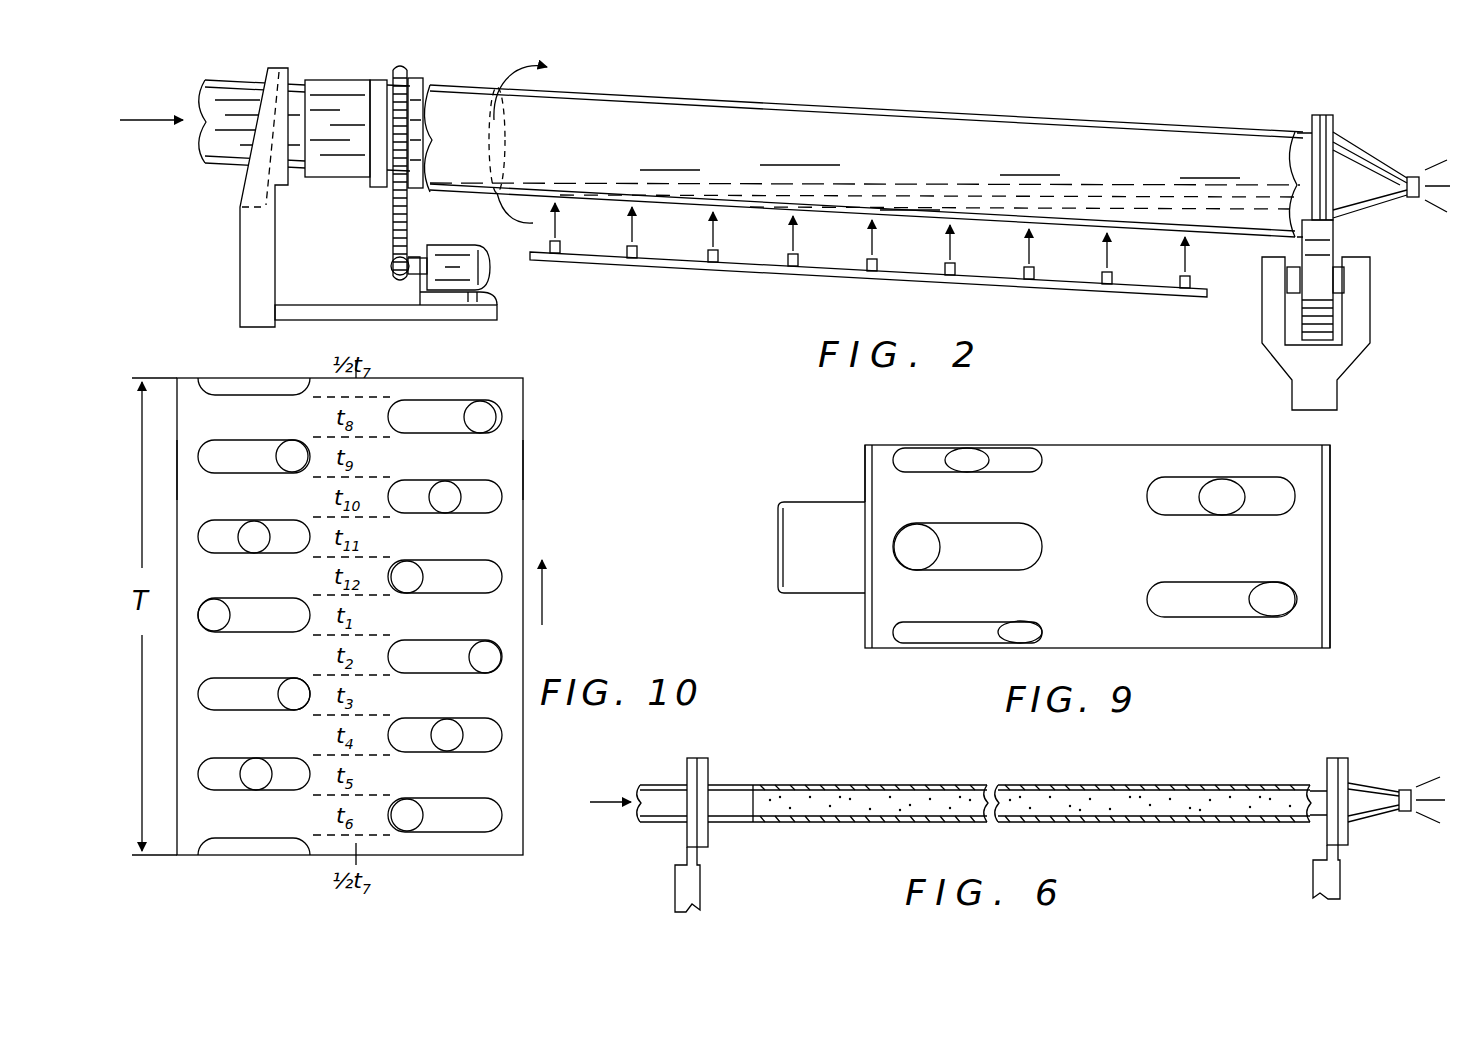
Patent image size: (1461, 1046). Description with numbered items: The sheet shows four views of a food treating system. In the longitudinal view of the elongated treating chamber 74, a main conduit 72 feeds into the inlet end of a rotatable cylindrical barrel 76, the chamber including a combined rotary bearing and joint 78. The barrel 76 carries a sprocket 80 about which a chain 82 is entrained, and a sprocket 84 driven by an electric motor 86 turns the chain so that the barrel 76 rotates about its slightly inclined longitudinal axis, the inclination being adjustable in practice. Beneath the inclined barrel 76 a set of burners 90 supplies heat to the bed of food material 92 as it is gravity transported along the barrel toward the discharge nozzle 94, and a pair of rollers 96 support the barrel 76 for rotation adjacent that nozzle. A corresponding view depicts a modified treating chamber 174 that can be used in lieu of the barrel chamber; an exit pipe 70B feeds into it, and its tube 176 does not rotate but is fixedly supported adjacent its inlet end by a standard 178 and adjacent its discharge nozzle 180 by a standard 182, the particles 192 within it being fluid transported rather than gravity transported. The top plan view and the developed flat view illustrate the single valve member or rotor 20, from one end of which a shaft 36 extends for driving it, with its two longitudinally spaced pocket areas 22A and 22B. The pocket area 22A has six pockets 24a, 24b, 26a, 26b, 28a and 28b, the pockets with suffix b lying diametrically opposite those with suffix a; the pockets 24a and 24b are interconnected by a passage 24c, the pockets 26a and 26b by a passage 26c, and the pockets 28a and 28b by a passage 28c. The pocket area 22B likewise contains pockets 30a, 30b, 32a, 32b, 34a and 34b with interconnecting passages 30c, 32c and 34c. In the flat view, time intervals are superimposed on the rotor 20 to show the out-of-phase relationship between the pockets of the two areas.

In FIG. 2, the main conduit 72 is at (222, 152).
In FIG. 2, the elongated treating chamber 74 is at (868, 140).
In FIG. 2, the rotatable cylindrical barrel 76 is at (697, 93).
In FIG. 2, the combined rotary bearing and joint 78 is at (345, 95).
In FIG. 2, the sprocket 80 is at (410, 92).
In FIG. 2, the chain 82 is at (393, 216).
In FIG. 2, the sprocket 84 is at (391, 266).
In FIG. 2, the electric motor 86 is at (482, 268).
In FIG. 2, the set of burners 90 is at (855, 283).
In FIG. 2, the bed of food material 92 is at (847, 182).
In FIG. 2, the discharge nozzle 94 is at (1413, 177).
In FIG. 2, the rollers 96 is at (1335, 245).
In FIG. 9, the rotor 20 is at (1295, 545).
In FIG. 10, the pocket area 22A is at (173, 475).
In FIG. 9, the pocket area 22A is at (903, 483).
In FIG. 10, the pocket area 22B is at (530, 470).
In FIG. 9, the pocket area 22B is at (1300, 473).
In FIG. 10, the pocket 24a is at (254, 615).
In FIG. 9, the pocket 24a is at (980, 540).
In FIG. 10, the pocket 24b is at (248, 385).
In FIG. 10, the passage 24c is at (211, 385).
In FIG. 9, the passage 24c is at (915, 560).
In FIG. 10, the pocket 26a is at (254, 694).
In FIG. 9, the pocket 26a is at (955, 635).
In FIG. 10, the pocket 26b is at (254, 456).
In FIG. 10, the passage 26c is at (297, 445).
In FIG. 9, the passage 26c is at (1025, 637).
In FIG. 10, the pocket 28a is at (222, 770).
In FIG. 10, the pocket 28b is at (216, 532).
In FIG. 9, the pocket 28b is at (921, 460).
In FIG. 10, the passage 28c is at (250, 530).
In FIG. 9, the passage 28c is at (968, 455).
In FIG. 10, the pocket 30a is at (445, 656).
In FIG. 9, the pocket 30a is at (1185, 610).
In FIG. 10, the pocket 30b is at (445, 416).
In FIG. 10, the passage 30c is at (480, 425).
In FIG. 9, the passage 30c is at (1272, 610).
In FIG. 10, the pocket 32a is at (412, 742).
In FIG. 10, the pocket 32b is at (413, 500).
In FIG. 9, the pocket 32b is at (1182, 495).
In FIG. 10, the passage 32c is at (447, 505).
In FIG. 9, the passage 32c is at (1222, 485).
In FIG. 10, the pocket 34a is at (445, 815).
In FIG. 10, the pocket 34b is at (445, 576).
In FIG. 10, the passage 34c is at (407, 588).
In FIG. 9, the shaft 36 is at (812, 518).
In FIG. 6, the exit pipe 70B is at (660, 782).
In FIG. 6, the treating chamber 174 is at (1019, 781).
In FIG. 6, the tube 176 is at (908, 784).
In FIG. 6, the standard 178 is at (700, 855).
In FIG. 6, the discharge nozzle 180 is at (1406, 790).
In FIG. 6, the standard 182 is at (1330, 845).
In FIG. 6, the particles 192 is at (1168, 795).